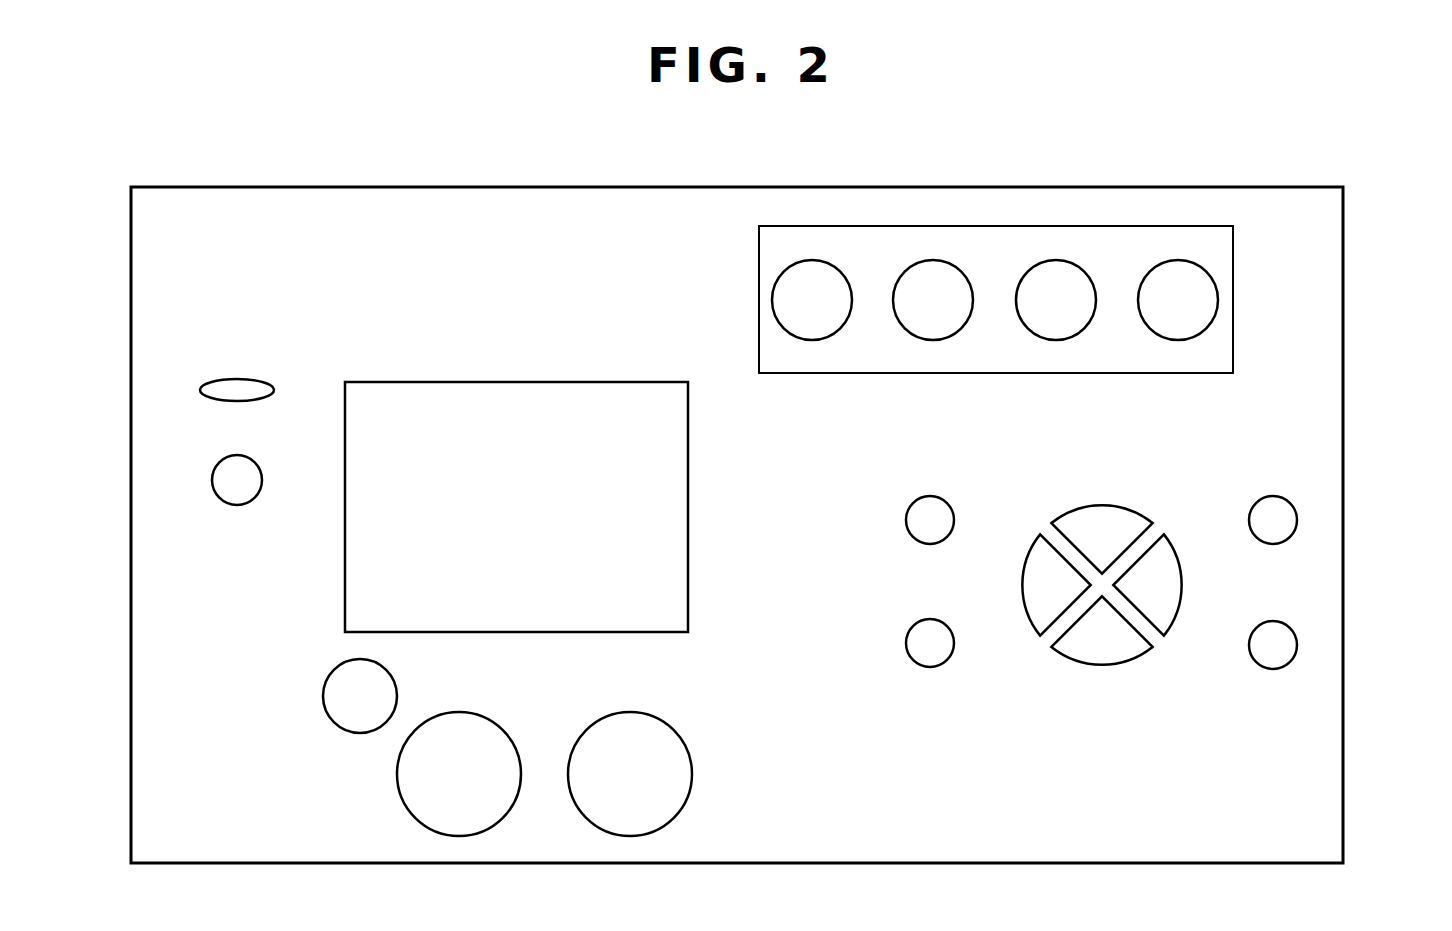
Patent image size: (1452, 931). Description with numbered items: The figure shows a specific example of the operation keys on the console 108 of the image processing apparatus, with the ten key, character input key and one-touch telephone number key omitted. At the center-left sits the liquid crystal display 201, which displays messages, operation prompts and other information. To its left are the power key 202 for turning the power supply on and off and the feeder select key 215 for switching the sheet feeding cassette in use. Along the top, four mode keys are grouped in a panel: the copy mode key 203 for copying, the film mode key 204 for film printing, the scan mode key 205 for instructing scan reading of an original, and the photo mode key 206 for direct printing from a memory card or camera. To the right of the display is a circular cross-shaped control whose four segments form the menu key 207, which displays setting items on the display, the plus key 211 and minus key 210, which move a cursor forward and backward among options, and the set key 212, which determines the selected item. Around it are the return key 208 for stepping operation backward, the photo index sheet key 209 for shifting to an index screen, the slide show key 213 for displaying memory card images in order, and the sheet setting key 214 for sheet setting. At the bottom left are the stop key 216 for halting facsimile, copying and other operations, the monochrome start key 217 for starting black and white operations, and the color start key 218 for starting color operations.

The console 108 is at (331, 172).
The liquid crystal display (LCD) 201 is at (520, 382).
The power key 202 is at (200, 390).
The copy mode key 203 is at (812, 261).
The film mode key 204 is at (933, 261).
The scan mode key 205 is at (1056, 261).
The photo mode key 206 is at (1178, 261).
The menu key 207 is at (1132, 525).
The return key 208 is at (921, 525).
The photo index sheet key 209 is at (1285, 524).
The minus key 210 is at (1042, 563).
The plus key 211 is at (1162, 563).
The set key 212 is at (1132, 638).
The slide show key 213 is at (921, 648).
The sheet setting key 214 is at (1285, 649).
The feeder select key 215 is at (212, 480).
The stop key 216 is at (323, 692).
The monochrome start key 217 is at (397, 768).
The color start key 218 is at (692, 772).